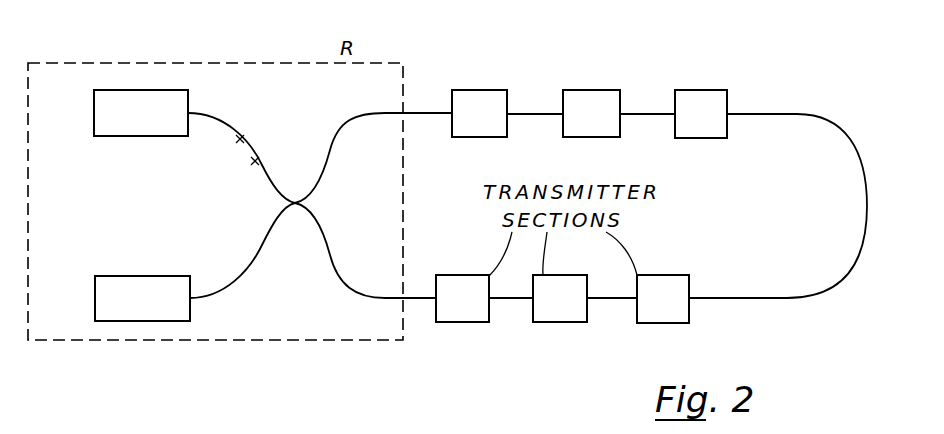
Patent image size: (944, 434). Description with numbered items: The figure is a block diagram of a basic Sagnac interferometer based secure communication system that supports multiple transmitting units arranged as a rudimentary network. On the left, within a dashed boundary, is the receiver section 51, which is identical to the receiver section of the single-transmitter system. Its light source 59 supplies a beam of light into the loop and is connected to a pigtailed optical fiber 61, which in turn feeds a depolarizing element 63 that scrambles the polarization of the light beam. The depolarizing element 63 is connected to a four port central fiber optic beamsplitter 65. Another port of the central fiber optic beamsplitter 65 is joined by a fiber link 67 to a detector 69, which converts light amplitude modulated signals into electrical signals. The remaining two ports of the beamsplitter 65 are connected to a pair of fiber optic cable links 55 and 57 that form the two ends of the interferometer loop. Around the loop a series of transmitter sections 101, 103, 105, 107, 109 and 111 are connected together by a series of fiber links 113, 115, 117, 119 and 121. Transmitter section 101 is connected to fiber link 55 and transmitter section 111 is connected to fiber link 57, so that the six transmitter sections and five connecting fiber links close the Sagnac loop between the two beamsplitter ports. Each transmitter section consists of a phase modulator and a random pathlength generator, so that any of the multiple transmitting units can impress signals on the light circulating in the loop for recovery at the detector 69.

The receiver section 51 is at (233, 63).
The fiber optic cable link 55 is at (436, 114).
The fiber optic cable link 57 is at (422, 298).
The light source 59 is at (141, 140).
The pigtailed optical fiber 61 is at (213, 115).
The depolarizing element 63 is at (243, 148).
The central fiber optic beamsplitter 65 is at (295, 205).
The fiber link 67 is at (237, 278).
The detector 69 is at (131, 287).
The transmitter section 101 is at (479, 100).
The transmitter section 103 is at (591, 100).
The transmitter section 105 is at (701, 100).
The transmitter section 107 is at (663, 286).
The transmitter section 109 is at (560, 285).
The transmitter section 111 is at (462, 285).
The fiber link 113 is at (535, 114).
The fiber link 115 is at (650, 114).
The fiber link 117 is at (814, 90).
The fiber link 119 is at (620, 298).
The fiber link 121 is at (510, 298).